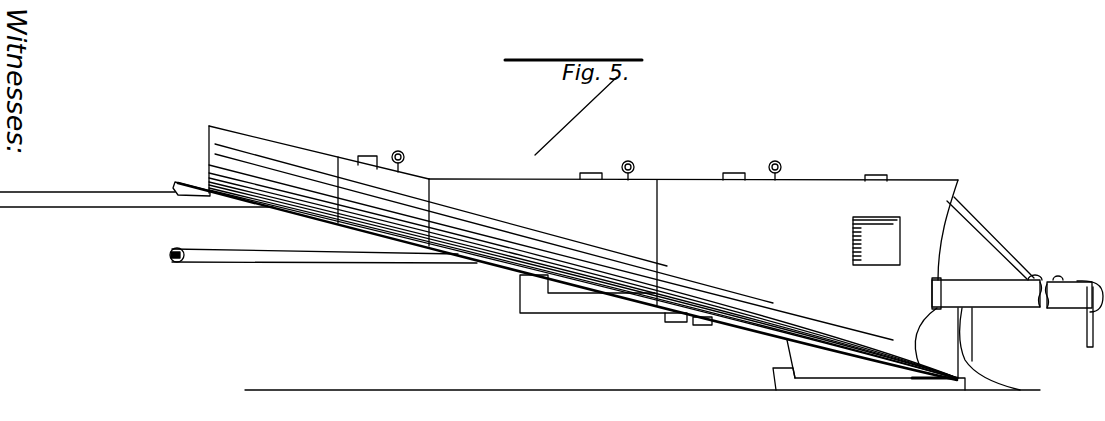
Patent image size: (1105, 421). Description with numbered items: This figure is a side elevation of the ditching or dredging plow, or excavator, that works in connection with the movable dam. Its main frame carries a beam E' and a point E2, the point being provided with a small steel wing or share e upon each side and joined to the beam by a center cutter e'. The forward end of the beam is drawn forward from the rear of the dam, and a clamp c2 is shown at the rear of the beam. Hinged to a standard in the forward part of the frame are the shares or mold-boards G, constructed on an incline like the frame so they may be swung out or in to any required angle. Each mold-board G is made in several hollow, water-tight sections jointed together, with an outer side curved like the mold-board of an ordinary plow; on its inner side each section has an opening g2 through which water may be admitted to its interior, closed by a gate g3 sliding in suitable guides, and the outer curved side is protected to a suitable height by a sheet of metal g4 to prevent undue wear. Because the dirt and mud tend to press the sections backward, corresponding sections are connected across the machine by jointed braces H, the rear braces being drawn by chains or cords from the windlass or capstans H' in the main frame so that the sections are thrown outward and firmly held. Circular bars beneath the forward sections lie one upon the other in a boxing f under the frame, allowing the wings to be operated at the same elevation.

The share or mold-board G is at (372, 177).
The gate g3 is at (359, 157).
The eye on mold-board top g'' is at (596, 160).
The sheet of metal g4 is at (886, 175).
The opening g2 is at (876, 241).
The brace H is at (323, 266).
The windlass or capstan H' is at (666, 328).
The boxing f is at (704, 326).
The beam E' is at (1012, 292).
The point E2 is at (1030, 387).
The steel wing or share e is at (967, 349).
The center cutter e' is at (975, 343).
The clamp c2 is at (1090, 303).